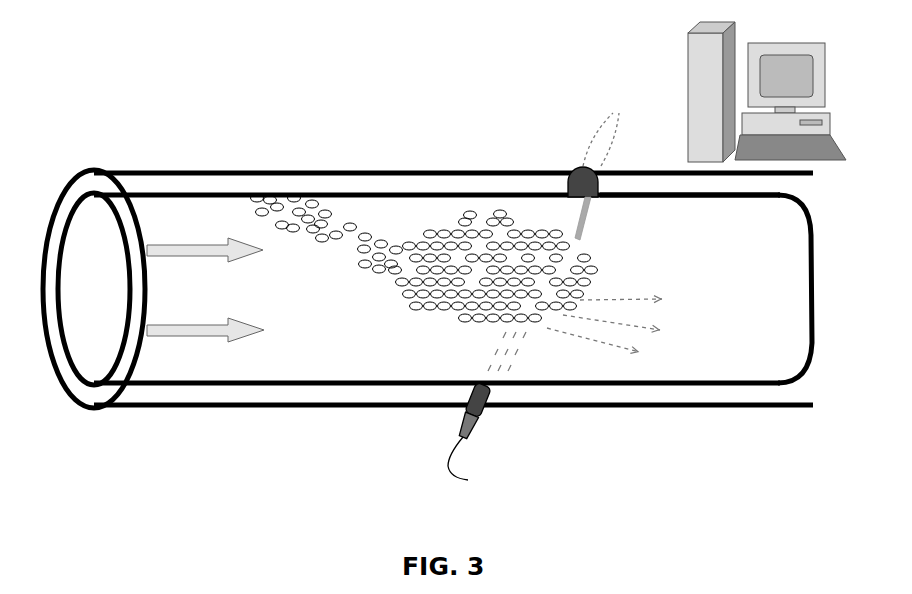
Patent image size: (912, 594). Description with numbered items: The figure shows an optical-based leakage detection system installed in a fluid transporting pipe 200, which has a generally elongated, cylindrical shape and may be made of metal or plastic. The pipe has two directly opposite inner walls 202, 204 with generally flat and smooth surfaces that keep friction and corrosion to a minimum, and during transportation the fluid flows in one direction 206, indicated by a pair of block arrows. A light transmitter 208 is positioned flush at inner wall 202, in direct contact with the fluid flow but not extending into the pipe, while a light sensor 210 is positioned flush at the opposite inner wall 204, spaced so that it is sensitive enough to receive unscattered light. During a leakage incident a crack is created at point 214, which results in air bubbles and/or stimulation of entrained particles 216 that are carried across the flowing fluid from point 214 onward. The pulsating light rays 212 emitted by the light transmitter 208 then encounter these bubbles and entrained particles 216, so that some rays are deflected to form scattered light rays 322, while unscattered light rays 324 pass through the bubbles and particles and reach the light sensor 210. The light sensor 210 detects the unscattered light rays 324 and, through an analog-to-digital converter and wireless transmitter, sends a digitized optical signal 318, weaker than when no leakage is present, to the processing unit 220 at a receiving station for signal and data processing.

The fluid transporting pipe 200 is at (155, 168).
The inner wall 202 is at (736, 375).
The inner wall 204 is at (705, 201).
The fluid flow direction 206 is at (205, 290).
The light transmitter 208 is at (501, 421).
The light sensor 210 is at (569, 165).
The pulsating light rays 212 is at (521, 361).
The crack point 214 is at (256, 191).
The entrained particles 216 is at (333, 213).
The processing unit 220 is at (685, 48).
The digitized optical signal 318 is at (604, 114).
The scattered light rays 322 is at (666, 316).
The unscattered light rays 324 is at (589, 228).